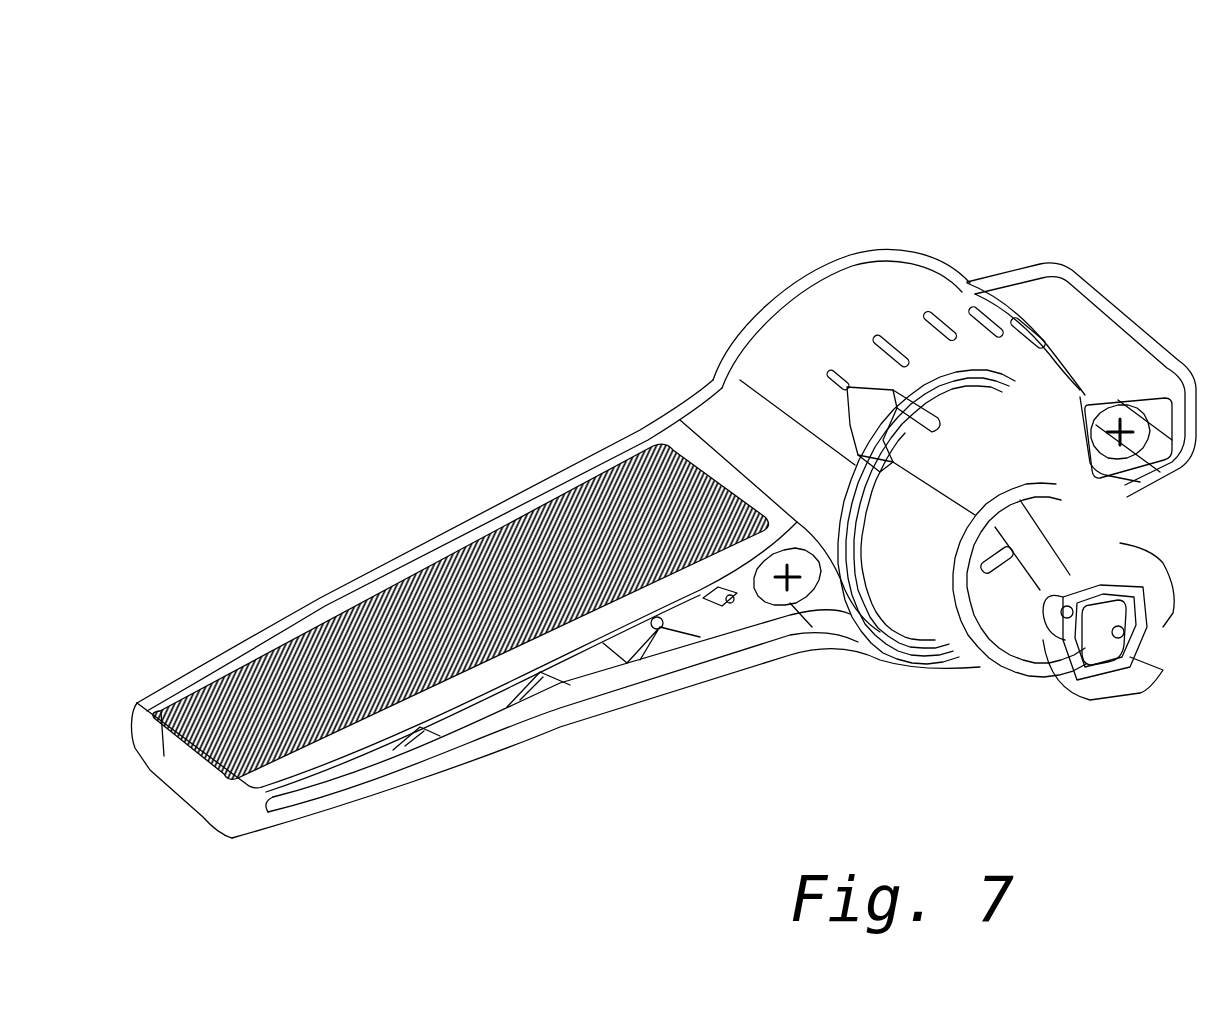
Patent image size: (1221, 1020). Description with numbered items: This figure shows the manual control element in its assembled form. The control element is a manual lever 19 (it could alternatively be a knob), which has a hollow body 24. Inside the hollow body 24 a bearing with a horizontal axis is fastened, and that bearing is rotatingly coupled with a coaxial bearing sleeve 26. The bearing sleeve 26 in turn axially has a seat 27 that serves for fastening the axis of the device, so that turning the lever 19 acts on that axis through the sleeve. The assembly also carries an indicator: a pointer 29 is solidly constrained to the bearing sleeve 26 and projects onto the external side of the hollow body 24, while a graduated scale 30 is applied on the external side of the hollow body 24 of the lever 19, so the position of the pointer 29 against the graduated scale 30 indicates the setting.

The manual lever 19 is at (573, 466).
The hollow body 24 is at (933, 270).
The bearing sleeve 26 is at (1030, 487).
The seat 27 is at (1123, 607).
The pointer 29 is at (863, 398).
The graduated scale 30 is at (908, 310).